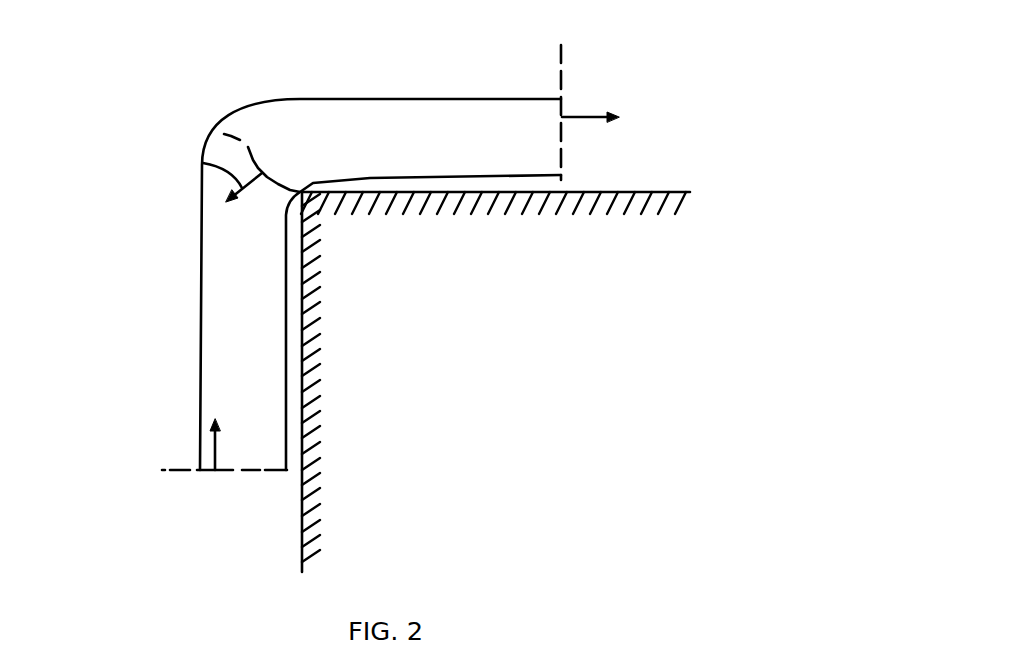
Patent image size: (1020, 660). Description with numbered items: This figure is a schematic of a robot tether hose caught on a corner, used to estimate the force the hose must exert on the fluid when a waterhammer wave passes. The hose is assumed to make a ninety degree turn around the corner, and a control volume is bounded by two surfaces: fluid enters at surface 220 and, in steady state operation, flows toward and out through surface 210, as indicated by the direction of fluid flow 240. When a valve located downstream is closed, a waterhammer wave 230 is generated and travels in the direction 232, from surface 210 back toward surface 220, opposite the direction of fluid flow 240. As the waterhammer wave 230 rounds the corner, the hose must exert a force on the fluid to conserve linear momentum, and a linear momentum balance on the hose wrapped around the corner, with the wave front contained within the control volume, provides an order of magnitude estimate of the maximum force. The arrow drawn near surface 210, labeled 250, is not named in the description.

The surface 210 is at (562, 83).
The surface 220 is at (227, 471).
The waterhammer wave 230 is at (248, 147).
The direction of waterhammer wave travel 232 is at (202, 165).
The direction of fluid flow 240 is at (213, 444).
The outlet flow direction arrow 250 is at (658, 101).